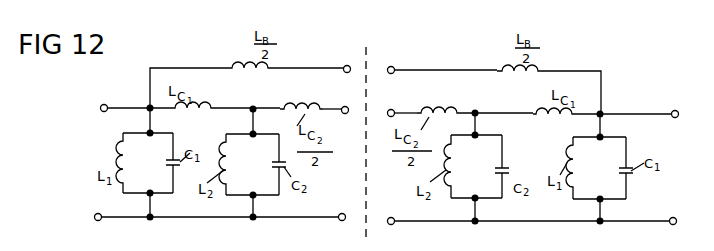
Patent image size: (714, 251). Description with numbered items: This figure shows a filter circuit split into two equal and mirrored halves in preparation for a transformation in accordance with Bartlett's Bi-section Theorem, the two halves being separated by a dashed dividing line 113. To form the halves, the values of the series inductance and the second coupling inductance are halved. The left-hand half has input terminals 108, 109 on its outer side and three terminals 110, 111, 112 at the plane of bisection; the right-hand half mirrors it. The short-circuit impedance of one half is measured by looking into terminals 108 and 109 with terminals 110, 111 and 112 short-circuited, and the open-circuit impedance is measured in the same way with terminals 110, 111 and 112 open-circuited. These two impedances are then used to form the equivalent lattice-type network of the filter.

The terminal 108 is at (104, 104).
The terminal 109 is at (100, 220).
The terminal 110 is at (344, 67).
The terminal 111 is at (343, 107).
The terminal 112 is at (340, 221).
The dividing line between filter sections 113 is at (367, 80).